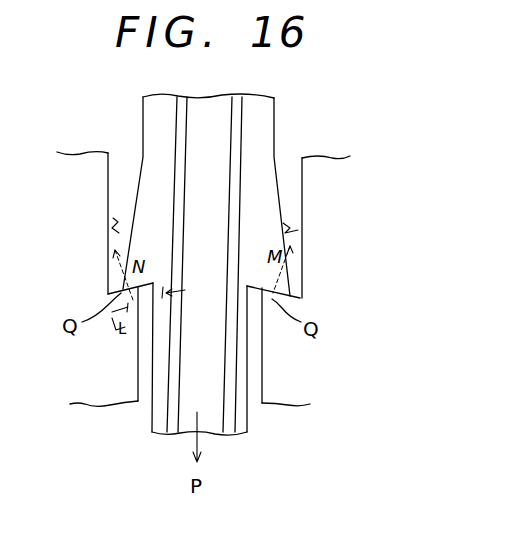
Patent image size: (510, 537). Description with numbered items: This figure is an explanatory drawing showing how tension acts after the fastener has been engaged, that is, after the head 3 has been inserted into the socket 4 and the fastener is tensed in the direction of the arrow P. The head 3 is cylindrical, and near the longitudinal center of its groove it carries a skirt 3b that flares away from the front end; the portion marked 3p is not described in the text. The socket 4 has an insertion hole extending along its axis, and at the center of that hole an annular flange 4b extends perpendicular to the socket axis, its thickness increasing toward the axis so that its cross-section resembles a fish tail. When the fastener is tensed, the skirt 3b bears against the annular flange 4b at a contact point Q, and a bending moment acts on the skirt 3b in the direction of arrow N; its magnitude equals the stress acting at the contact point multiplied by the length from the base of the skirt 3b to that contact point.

The head 3 is at (284, 110).
The passage of upper member 3p is at (205, 121).
The skirt 3b is at (140, 205).
The socket 4 is at (318, 223).
The annular flange 4b is at (127, 351).